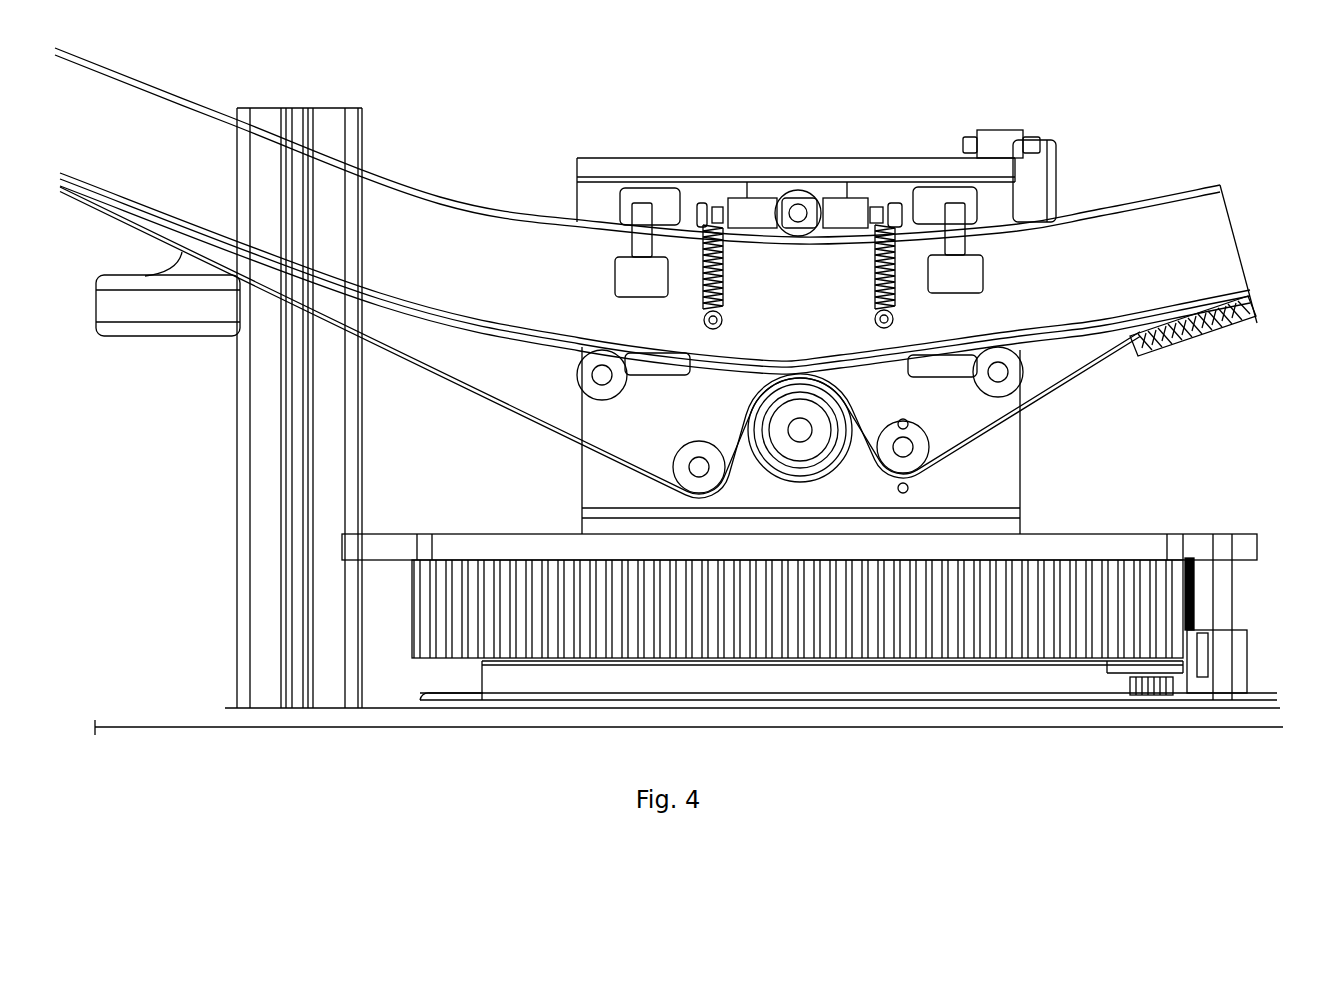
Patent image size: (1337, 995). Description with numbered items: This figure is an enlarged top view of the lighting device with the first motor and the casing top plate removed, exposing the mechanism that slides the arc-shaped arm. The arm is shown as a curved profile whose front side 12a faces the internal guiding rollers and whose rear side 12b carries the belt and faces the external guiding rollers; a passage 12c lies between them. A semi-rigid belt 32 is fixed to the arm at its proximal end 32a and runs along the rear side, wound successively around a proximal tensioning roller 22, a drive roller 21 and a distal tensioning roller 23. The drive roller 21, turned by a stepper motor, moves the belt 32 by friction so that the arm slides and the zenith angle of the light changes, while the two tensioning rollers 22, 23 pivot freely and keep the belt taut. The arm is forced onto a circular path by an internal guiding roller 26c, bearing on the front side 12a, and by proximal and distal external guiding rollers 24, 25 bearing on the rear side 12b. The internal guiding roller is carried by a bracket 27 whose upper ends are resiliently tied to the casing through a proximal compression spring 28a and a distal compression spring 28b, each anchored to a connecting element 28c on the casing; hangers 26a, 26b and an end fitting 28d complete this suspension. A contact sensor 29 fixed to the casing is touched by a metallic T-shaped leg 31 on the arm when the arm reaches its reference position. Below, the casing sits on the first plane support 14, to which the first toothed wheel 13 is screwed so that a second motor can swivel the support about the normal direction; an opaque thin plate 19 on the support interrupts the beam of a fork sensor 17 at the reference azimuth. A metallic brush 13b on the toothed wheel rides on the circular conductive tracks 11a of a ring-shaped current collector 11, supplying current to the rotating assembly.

The ring-shaped current collector 11 is at (1275, 692).
The circular conductive tracks 11a is at (438, 700).
The front side of the arc-shaped arm 12a is at (488, 196).
The rear side of the arc-shaped arm 12b is at (466, 316).
The rail gap 12c is at (655, 280).
The first toothed wheel 13 is at (412, 636).
The metallic brush 13b is at (1125, 688).
The first plane support 14 is at (1260, 530).
The fork sensor 17 is at (1248, 644).
The opaque thin plate 19 is at (1232, 598).
The drive roller 21 is at (782, 476).
The proximal tensioning roller 22 is at (930, 445).
The distal tensioning roller 23 is at (692, 448).
The proximal external guiding roller 24 is at (975, 383).
The distal external guiding roller 25 is at (576, 372).
The hanger 26a is at (988, 278).
The hanger 26b is at (612, 280).
The internal guiding roller 26c is at (805, 176).
The bracket 27 is at (760, 240).
The proximal compression spring 28a is at (896, 308).
The distal compression spring 28b is at (704, 305).
The connecting element 28c is at (876, 319).
The spring end fitting 28d is at (722, 323).
The contact sensor 29 is at (1006, 130).
The metallic T-shaped leg 31 is at (1052, 186).
The semi-rigid belt 32 is at (472, 400).
The proximal end of the belt 32a is at (1197, 345).